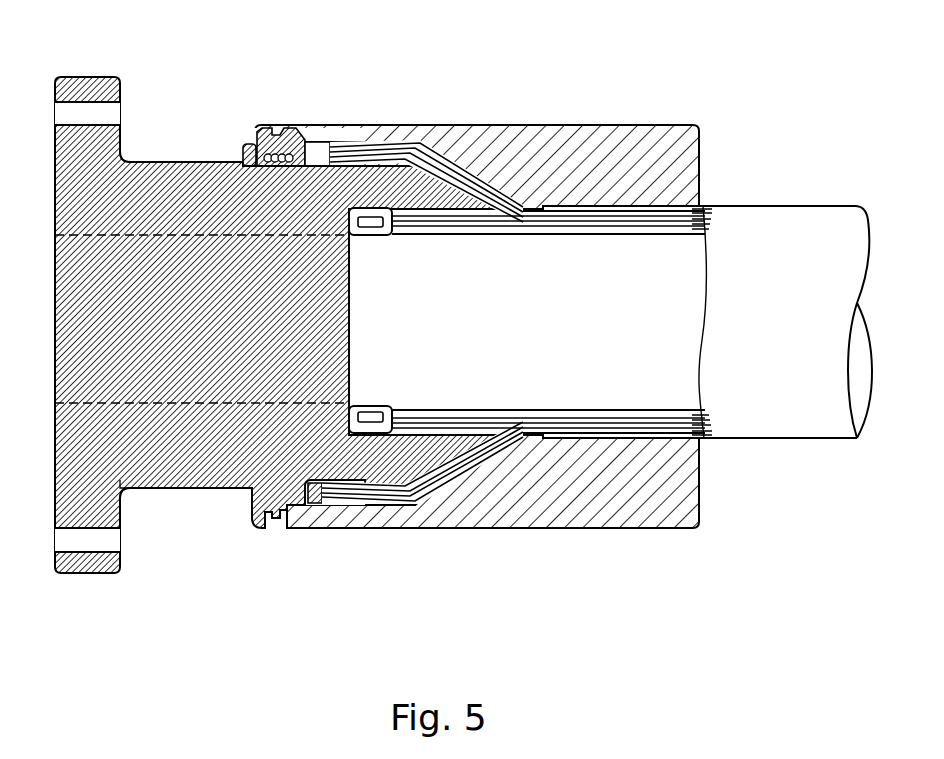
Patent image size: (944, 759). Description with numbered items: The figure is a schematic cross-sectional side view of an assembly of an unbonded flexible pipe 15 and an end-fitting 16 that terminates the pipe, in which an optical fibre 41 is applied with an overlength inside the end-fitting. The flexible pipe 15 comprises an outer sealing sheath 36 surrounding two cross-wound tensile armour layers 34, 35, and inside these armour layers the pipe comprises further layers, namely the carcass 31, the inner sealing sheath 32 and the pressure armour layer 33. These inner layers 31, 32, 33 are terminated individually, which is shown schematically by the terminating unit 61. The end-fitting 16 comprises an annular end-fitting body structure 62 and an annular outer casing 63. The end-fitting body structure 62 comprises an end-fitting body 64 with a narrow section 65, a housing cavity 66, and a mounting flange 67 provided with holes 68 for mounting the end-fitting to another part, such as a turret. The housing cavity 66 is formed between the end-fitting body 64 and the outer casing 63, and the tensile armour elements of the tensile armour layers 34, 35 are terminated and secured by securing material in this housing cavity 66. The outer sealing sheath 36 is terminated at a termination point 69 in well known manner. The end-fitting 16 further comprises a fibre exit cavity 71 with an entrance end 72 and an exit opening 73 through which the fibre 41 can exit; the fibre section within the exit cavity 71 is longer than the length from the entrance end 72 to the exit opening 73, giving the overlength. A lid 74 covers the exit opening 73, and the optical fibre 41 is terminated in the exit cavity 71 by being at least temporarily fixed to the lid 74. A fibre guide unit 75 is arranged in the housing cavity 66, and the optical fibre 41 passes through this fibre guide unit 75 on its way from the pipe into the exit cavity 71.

The flexible pipe 15 is at (798, 186).
The end-fitting 16 is at (671, 48).
The carcass 31 is at (560, 410).
The inner sealing sheath 32 is at (548, 322).
The pressure armour layer 33 is at (548, 322).
The tensile armour layer 34 is at (385, 506).
The tensile armour layer 35 is at (353, 500).
The outer sealing sheath 36 is at (845, 442).
The optical fibre 41 is at (264, 130).
The terminating unit 61 is at (388, 405).
The end-fitting body structure 62 is at (54, 449).
The outer casing 63 is at (453, 135).
The end-fitting body 64 is at (172, 407).
The narrow section 65 is at (172, 488).
The housing cavity 66 is at (315, 492).
The mounting flange 67 is at (126, 158).
The holes 68 is at (88, 110).
The termination point 69 is at (545, 437).
The fibre exit cavity 71 is at (280, 138).
The entrance end 72 is at (380, 156).
The exit opening 73 is at (258, 174).
The lid 74 is at (241, 152).
The fibre guide unit 75 is at (310, 141).